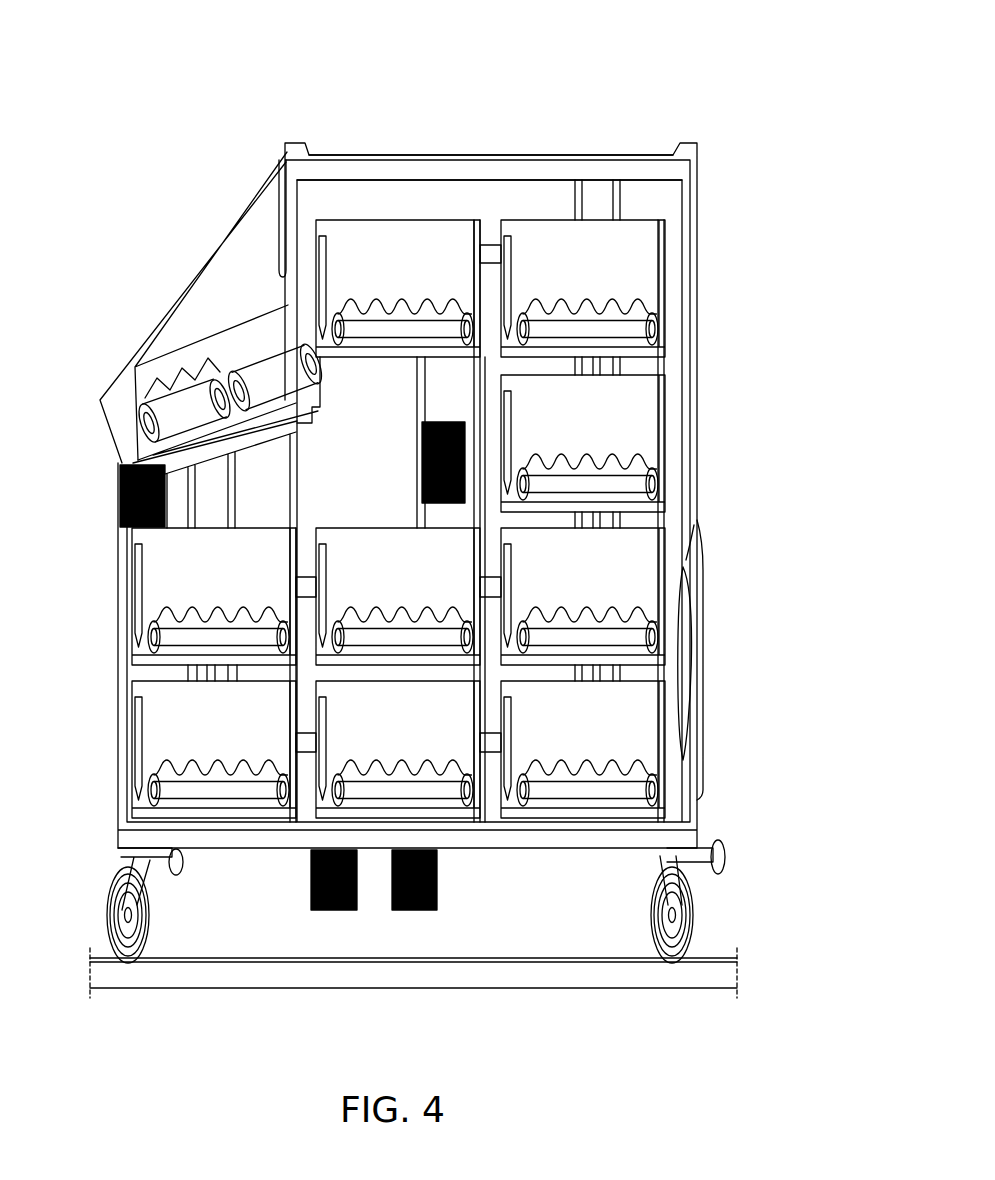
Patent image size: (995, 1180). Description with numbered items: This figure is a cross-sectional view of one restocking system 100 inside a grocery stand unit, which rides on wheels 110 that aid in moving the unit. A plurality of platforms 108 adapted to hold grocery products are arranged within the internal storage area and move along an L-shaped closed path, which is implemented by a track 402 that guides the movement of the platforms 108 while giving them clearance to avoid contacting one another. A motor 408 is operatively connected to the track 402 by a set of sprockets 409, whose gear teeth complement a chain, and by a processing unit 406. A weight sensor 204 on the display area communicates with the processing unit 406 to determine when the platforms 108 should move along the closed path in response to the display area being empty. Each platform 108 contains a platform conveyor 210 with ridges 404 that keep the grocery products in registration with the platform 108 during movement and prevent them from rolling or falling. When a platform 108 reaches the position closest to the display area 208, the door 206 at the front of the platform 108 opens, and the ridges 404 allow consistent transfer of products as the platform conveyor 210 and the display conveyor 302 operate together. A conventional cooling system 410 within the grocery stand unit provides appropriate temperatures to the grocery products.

The restocking system 100 is at (690, 45).
The platform 108 is at (476, 203).
The wheel 110 is at (683, 915).
The weight sensor 204 is at (121, 497).
The door 206 is at (318, 250).
The display area 208 is at (372, 197).
The platform conveyor 210 is at (366, 327).
The display conveyor 302 is at (228, 380).
The track 402 is at (486, 745).
The ridges 404 is at (640, 300).
The processing unit 406 is at (410, 912).
The motor 408 is at (335, 912).
The sprockets 409 is at (465, 432).
The cooling system 410 is at (703, 673).